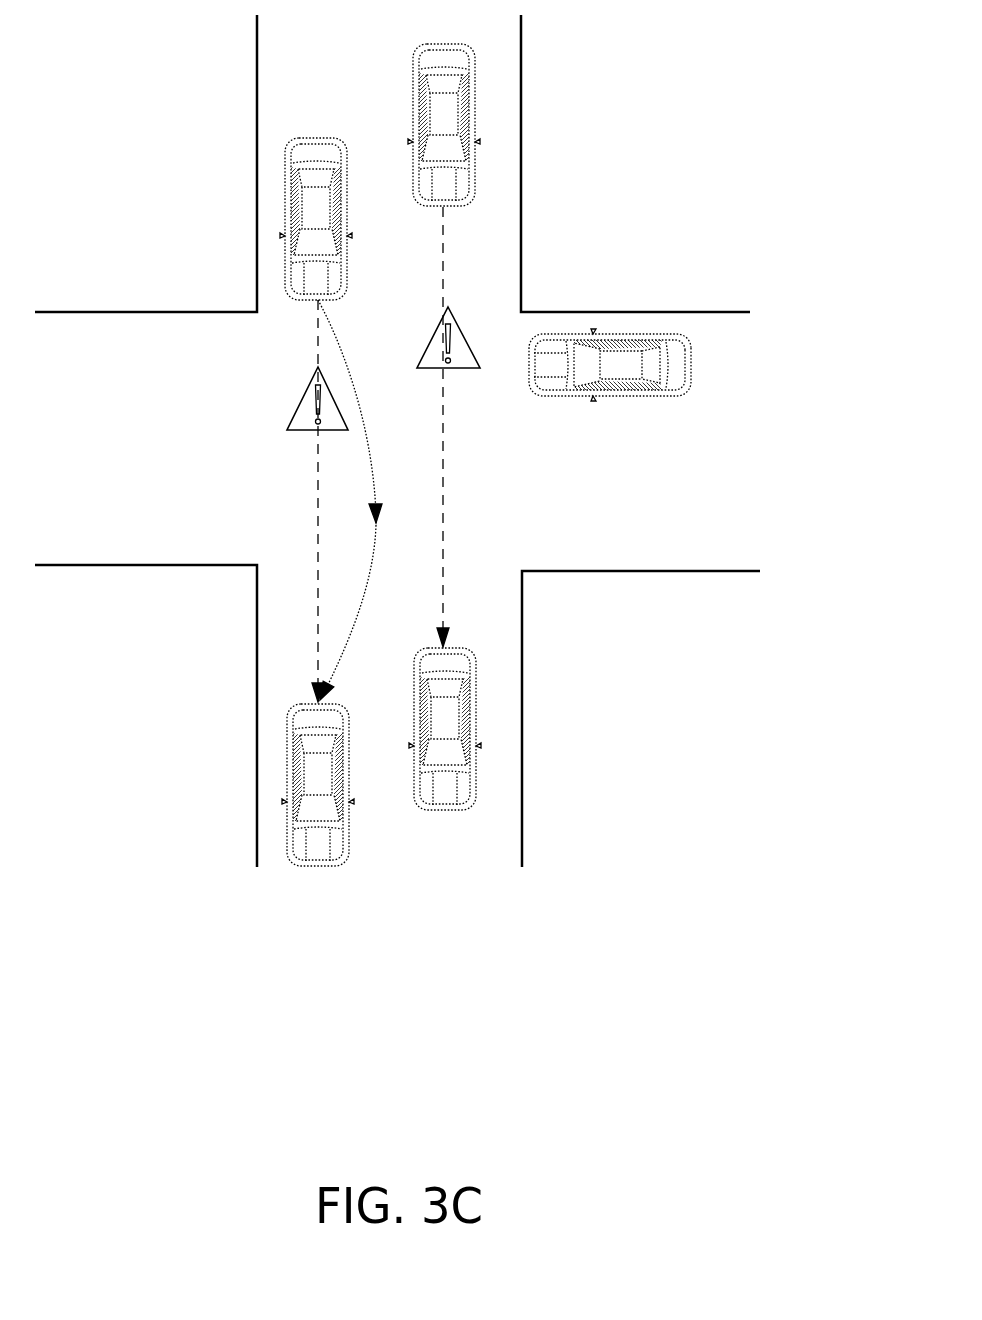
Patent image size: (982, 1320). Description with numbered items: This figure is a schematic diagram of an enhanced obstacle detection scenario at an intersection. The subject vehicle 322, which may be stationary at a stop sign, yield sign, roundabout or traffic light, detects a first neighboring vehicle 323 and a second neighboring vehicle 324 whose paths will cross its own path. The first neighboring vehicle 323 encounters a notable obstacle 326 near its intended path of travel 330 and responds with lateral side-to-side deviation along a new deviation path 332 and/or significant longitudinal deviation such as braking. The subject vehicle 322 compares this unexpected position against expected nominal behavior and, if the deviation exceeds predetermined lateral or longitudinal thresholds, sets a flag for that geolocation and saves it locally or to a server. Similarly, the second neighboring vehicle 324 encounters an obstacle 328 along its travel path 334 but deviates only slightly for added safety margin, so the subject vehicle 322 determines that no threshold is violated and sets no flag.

The subject vehicle 322 is at (557, 330).
The first neighboring vehicle 323 is at (343, 150).
The second neighboring vehicle 324 is at (470, 68).
The obstacle 326 is at (297, 407).
The obstacle 328 is at (465, 333).
The intended path of travel 330 is at (318, 482).
The new deviation path 332 is at (358, 393).
The travel path 334 is at (443, 233).